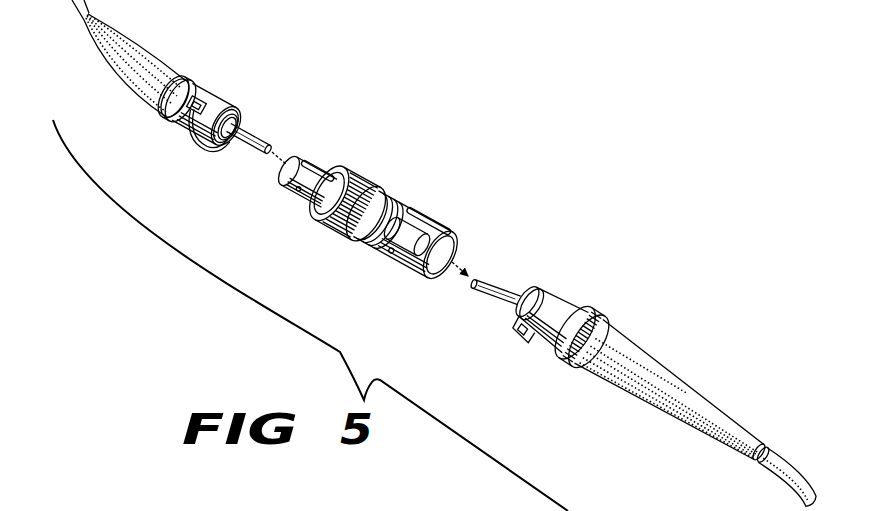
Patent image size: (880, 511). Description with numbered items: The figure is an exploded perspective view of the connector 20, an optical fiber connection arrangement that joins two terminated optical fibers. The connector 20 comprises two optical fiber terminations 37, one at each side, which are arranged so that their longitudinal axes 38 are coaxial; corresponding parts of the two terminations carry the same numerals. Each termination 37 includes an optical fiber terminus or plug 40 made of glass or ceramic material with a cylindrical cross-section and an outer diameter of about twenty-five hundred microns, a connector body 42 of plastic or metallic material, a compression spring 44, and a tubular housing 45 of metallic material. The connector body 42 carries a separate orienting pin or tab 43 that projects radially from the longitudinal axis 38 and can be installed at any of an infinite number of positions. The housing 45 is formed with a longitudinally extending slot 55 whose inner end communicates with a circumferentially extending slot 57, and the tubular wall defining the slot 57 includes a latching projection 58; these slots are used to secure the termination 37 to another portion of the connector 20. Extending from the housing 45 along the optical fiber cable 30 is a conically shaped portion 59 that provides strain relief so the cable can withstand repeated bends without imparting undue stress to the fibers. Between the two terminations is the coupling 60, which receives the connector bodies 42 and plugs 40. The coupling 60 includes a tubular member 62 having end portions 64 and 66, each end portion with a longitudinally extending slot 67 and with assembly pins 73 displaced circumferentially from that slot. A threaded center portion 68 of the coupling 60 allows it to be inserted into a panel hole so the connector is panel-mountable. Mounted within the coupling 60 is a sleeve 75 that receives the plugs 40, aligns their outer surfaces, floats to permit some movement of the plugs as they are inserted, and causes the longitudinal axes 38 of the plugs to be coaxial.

The connector 20 is at (479, 127).
The fiber optic cable 30 is at (157, 60).
The optical fiber termination 37 is at (279, 78).
The longitudinal axis 38 is at (277, 153).
The plug 40 is at (260, 139).
The connector body 42 is at (219, 144).
The orienting pin or tab 43 is at (228, 110).
The compression spring 44 is at (178, 110).
The tubular housing 45 is at (209, 84).
The longitudinally extending slot 55 is at (192, 128).
The circumferentially extending slot 57 is at (188, 95).
The latching projection 58 is at (515, 330).
The strain relief portion 59 is at (597, 343).
The coupling 60 is at (384, 174).
The tubular member 62 is at (406, 208).
The end portion 64 is at (290, 172).
The end portion 66 is at (437, 278).
The longitudinally extending slot 67 is at (317, 162).
The center portion 68 is at (353, 243).
The assembly pin 73 is at (298, 190).
The sleeve 75 is at (380, 249).